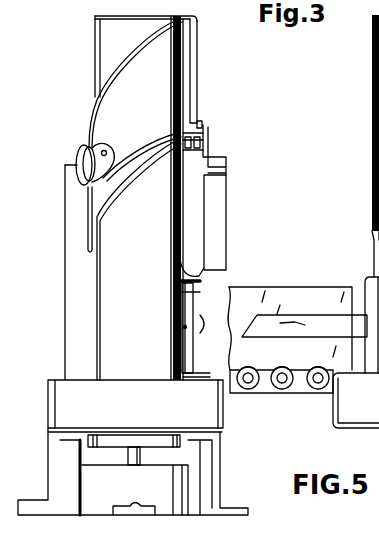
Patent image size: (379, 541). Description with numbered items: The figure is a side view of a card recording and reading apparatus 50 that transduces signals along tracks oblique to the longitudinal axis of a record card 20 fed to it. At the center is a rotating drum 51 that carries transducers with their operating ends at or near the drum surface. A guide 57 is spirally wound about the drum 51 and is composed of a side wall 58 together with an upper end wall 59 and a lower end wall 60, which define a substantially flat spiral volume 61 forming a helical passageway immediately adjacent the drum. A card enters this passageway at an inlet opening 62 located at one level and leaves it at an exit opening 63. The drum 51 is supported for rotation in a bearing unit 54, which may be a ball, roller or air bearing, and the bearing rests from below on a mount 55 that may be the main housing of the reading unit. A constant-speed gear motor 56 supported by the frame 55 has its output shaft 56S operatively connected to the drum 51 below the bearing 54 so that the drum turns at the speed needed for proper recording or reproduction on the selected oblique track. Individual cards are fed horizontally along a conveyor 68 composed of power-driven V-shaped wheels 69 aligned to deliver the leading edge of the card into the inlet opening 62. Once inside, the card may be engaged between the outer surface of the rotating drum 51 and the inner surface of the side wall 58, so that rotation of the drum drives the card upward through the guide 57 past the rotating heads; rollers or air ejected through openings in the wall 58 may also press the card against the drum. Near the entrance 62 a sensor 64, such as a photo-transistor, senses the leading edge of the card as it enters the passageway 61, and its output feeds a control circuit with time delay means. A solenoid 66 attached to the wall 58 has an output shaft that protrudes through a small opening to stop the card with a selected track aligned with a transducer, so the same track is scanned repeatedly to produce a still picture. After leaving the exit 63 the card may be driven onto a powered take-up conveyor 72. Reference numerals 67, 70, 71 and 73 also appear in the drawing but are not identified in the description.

The apparatus 50 is at (50, 52).
The drum 51 is at (95, 18).
The bearing unit 54 is at (142, 415).
The mount 55 is at (220, 467).
The constant-speed gear motor 56 is at (135, 490).
The output shaft 56S is at (145, 453).
The guide 57 is at (144, 78).
The side wall 58 is at (202, 288).
The upper end wall 59 is at (205, 279).
The lower end wall 60 is at (204, 366).
The spiral volume 61 is at (190, 345).
The inlet opening 62 is at (366, 280).
The exit opening 63 is at (194, 46).
The sensor 64 is at (206, 323).
The solenoid 66 is at (78, 151).
The belt guide 67 is at (65, 248).
The conveyor 68 is at (237, 394).
The V-shaped wheels 69 is at (275, 394).
The support arm 70 is at (332, 333).
The bracket 71 is at (206, 140).
The take-up conveyor 72 is at (201, 126).
The carriage plate 73 is at (222, 203).
The card 20 is at (285, 288).